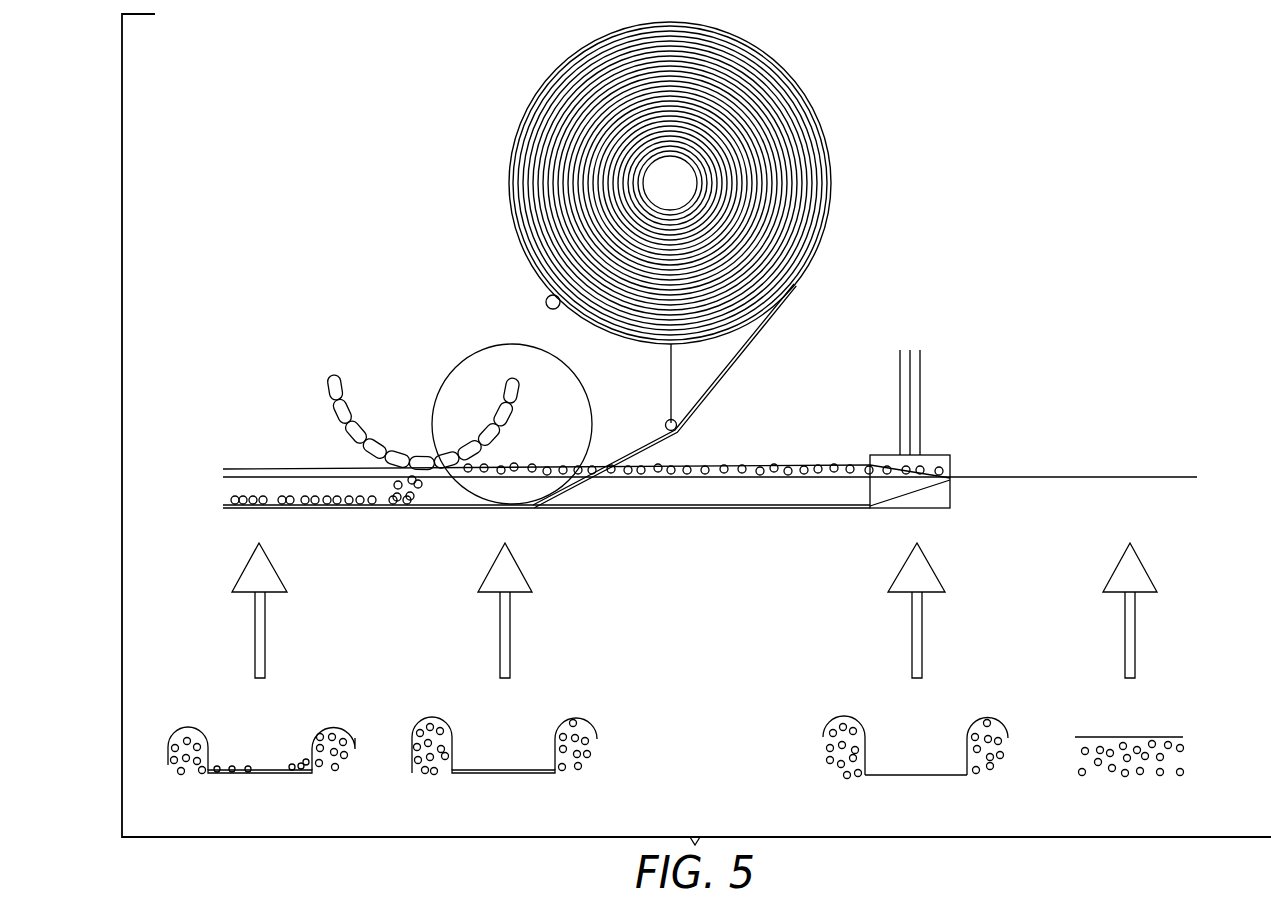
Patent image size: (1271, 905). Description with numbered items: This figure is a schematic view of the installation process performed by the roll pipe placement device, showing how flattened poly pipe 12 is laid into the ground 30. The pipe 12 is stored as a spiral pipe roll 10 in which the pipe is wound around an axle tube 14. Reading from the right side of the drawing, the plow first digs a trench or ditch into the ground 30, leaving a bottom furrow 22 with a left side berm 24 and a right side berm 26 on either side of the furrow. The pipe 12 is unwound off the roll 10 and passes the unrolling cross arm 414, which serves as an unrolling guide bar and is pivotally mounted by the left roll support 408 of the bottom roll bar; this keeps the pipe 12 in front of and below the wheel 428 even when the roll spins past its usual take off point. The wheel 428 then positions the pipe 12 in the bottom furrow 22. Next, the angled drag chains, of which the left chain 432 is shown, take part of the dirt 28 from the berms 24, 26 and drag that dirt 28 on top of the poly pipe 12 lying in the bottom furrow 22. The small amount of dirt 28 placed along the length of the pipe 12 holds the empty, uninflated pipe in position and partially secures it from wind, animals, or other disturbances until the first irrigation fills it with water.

The spiral pipe roll 10 is at (773, 58).
The axle tube 14 is at (697, 188).
The poly pipe 12 is at (740, 352).
The left roll support 408 is at (671, 380).
The unrolling cross arm 414 is at (665, 420).
The wheel 428 is at (490, 345).
The left chain 432 is at (348, 406).
The dirt 28 is at (410, 502).
The left side berm 24 is at (190, 727).
The right side berm 26 is at (340, 728).
The bottom furrow 22 is at (262, 773).
The ground 30 is at (1126, 782).